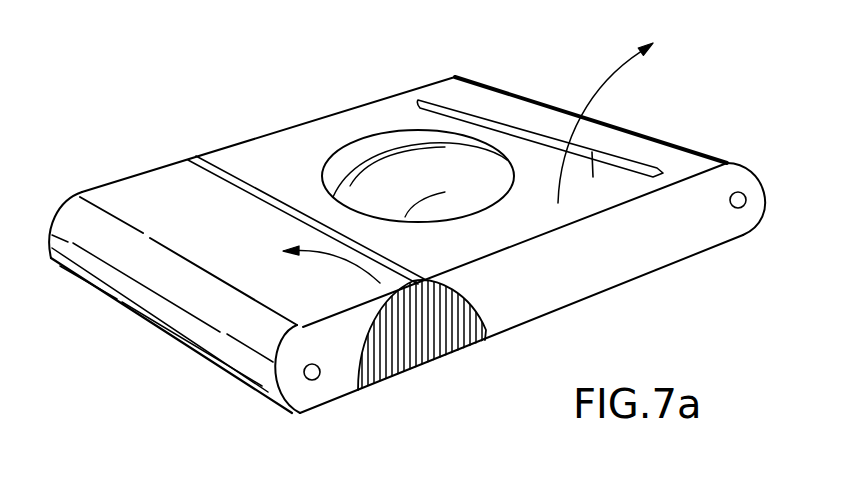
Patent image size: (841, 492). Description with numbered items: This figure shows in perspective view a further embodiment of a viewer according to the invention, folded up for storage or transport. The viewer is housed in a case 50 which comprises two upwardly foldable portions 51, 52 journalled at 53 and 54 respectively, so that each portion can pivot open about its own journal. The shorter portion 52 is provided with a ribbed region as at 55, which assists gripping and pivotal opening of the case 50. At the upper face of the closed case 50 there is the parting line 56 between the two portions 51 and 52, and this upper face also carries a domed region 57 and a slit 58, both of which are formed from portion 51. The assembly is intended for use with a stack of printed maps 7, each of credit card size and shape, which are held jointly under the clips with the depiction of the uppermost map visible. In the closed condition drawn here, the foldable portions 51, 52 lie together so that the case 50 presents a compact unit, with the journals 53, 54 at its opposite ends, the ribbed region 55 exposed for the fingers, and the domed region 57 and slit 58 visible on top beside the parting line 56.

The case 50 is at (393, 78).
The foldable portion 51 is at (637, 258).
The foldable portion 52 is at (337, 387).
The journal 53 is at (747, 202).
The journal 54 is at (310, 379).
The ribbed region 55 is at (427, 337).
The parting line 56 is at (233, 183).
The domed region 57 is at (352, 158).
The slit 58 is at (503, 122).
The printed maps 7 is at (613, 140).